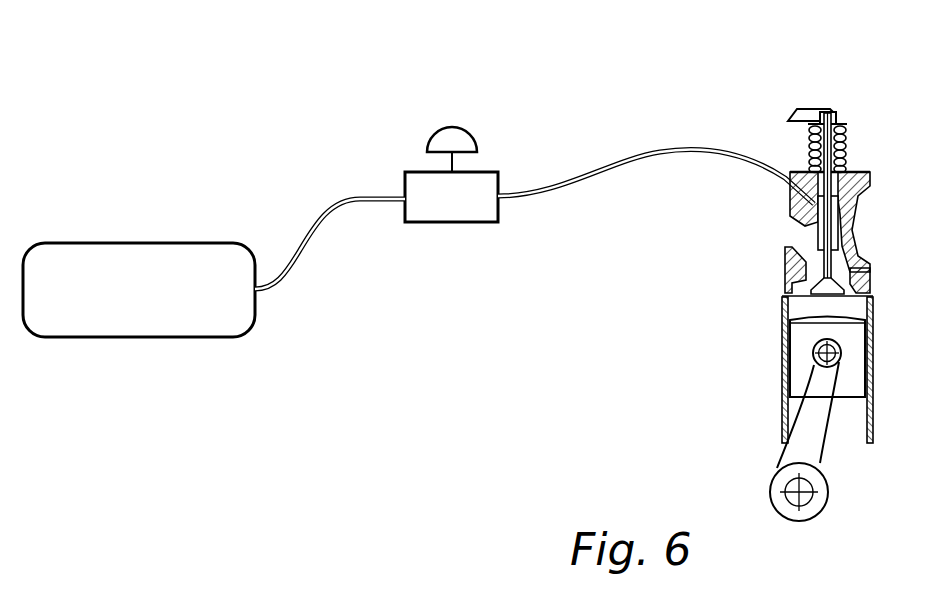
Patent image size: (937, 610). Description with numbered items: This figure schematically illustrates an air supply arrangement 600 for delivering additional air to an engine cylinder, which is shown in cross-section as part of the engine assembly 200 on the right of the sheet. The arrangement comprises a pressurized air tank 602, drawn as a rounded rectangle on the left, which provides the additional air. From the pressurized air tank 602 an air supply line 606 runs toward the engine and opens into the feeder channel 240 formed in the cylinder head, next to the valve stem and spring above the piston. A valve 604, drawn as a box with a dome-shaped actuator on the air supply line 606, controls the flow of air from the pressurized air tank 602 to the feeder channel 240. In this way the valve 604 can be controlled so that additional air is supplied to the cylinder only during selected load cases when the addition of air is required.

The air supply arrangement 600 is at (318, 84).
The pressurized air tank 602 is at (148, 310).
The valve 604 is at (452, 222).
The air supply line 606 is at (597, 172).
The engine cylinder assembly 200 is at (860, 100).
The feeder channel 240 is at (787, 198).